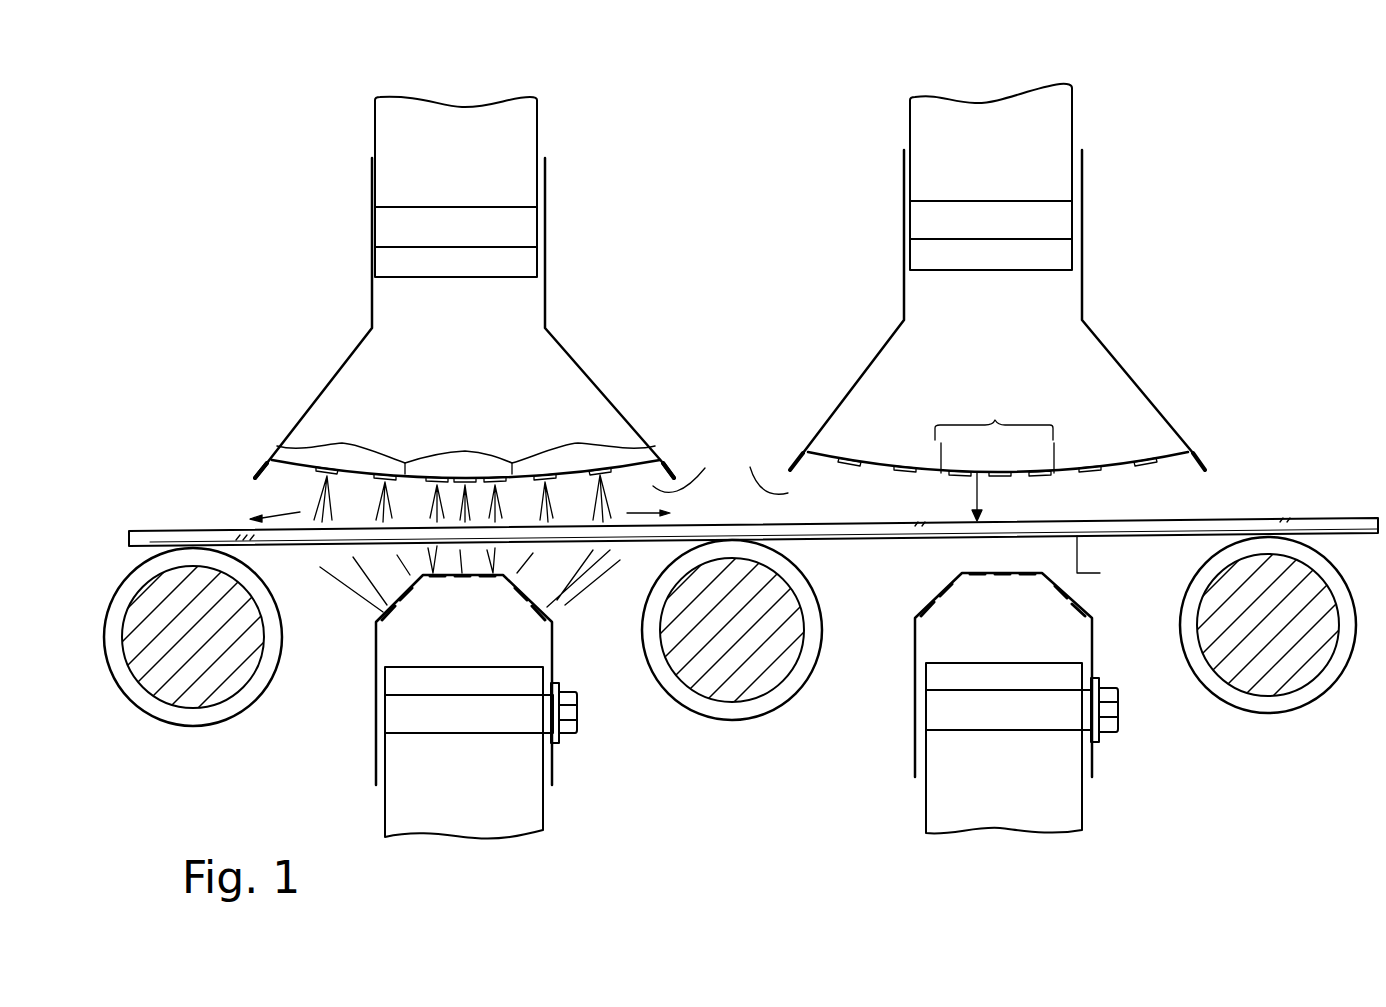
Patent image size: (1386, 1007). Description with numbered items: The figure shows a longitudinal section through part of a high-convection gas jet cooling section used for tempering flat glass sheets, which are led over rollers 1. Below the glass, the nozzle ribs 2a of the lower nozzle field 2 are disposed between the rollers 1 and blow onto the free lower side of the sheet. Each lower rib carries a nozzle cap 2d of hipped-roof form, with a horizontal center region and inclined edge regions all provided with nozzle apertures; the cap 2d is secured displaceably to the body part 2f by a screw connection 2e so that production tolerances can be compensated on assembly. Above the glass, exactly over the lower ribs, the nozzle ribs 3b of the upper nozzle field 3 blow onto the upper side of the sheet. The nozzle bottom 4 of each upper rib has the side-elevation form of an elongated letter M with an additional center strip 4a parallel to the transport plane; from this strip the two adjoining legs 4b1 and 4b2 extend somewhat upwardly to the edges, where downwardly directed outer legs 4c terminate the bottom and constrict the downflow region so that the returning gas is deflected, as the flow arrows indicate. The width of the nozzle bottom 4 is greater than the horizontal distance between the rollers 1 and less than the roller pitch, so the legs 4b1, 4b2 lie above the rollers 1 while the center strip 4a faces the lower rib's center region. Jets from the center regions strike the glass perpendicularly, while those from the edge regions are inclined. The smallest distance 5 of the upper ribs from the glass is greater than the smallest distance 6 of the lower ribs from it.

The roller 1 is at (177, 702).
The lower nozzle field 2 is at (448, 853).
The lower nozzle rib 2a is at (528, 786).
The nozzle cap 2d is at (376, 657).
The screw connection 2e is at (578, 718).
The body part 2f is at (545, 813).
The upper nozzle field 3 is at (1010, 68).
The upper nozzle rib 3b is at (580, 380).
The nozzle bottom 4 is at (302, 470).
The center strip 4a is at (745, 435).
The adjoining leg 4b1 is at (342, 432).
The adjoining leg 4b2 is at (577, 432).
The outer leg 4c is at (265, 462).
The smallest distance of the upper nozzle ribs from the glass sheet 5 is at (979, 500).
The smallest distance of the lower nozzle ribs from the glass sheet 6 is at (1079, 556).